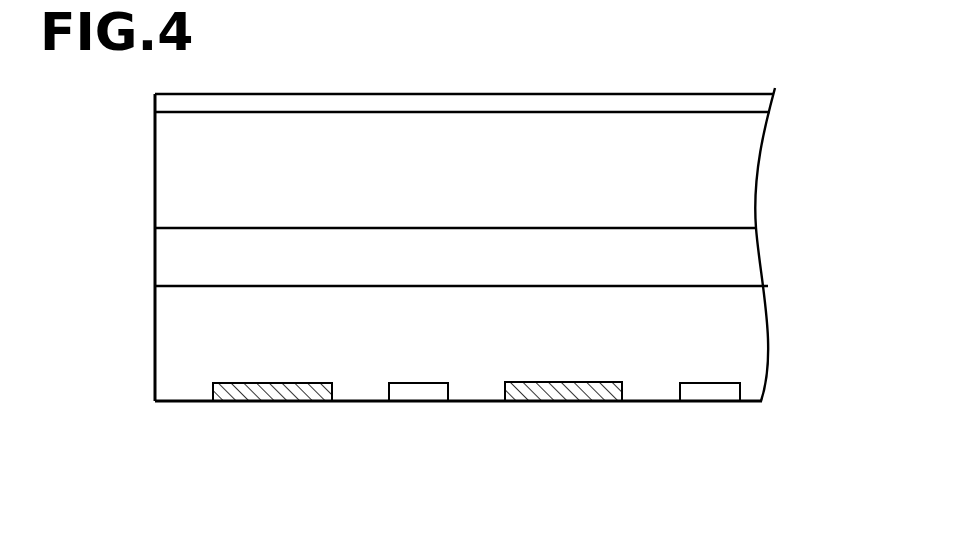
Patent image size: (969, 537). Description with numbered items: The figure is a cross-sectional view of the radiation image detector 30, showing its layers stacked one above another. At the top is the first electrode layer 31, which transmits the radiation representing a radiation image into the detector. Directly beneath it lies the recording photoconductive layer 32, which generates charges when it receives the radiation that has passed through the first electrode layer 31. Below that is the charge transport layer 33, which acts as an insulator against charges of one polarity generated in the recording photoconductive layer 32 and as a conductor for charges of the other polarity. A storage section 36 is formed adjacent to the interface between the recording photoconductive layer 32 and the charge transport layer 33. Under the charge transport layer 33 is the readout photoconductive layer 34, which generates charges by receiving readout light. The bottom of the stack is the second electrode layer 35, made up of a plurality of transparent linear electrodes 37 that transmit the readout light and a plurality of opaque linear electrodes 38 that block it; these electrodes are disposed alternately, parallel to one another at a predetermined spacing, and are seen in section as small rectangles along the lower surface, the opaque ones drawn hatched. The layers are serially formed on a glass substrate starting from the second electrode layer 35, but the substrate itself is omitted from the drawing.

The radiation image detector 30 is at (764, 66).
The first electrode layer 31 is at (163, 100).
The recording photoconductive layer 32 is at (163, 161).
The charge transport layer 33 is at (163, 259).
The readout photoconductive layer 34 is at (163, 311).
The second electrode layer 35 is at (425, 457).
The storage section 36 is at (182, 223).
The transparent linear electrode 37 is at (402, 392).
The opaque linear electrode 38 is at (248, 392).